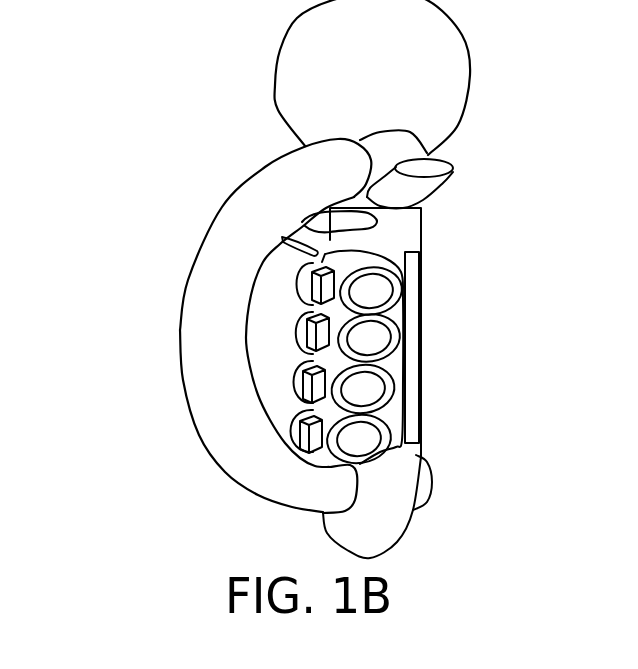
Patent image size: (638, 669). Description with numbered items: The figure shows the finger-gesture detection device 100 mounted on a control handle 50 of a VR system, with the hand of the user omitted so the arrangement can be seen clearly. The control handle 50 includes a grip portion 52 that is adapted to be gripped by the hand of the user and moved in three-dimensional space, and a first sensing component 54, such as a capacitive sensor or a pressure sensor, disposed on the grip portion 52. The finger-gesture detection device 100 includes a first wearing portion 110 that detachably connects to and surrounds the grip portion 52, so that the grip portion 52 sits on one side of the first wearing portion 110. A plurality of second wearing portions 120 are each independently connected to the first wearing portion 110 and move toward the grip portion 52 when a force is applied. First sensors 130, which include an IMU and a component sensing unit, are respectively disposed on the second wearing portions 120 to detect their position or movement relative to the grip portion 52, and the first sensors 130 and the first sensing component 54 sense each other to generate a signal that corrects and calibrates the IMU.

The control handle 50 is at (448, 77).
The grip portion 52 is at (407, 228).
The first sensing component 54 is at (413, 283).
The finger-gesture detection device 100 is at (460, 460).
The first wearing portion 110 is at (267, 365).
The second wearing portions 120 is at (316, 254).
The first sensors 130 is at (298, 390).